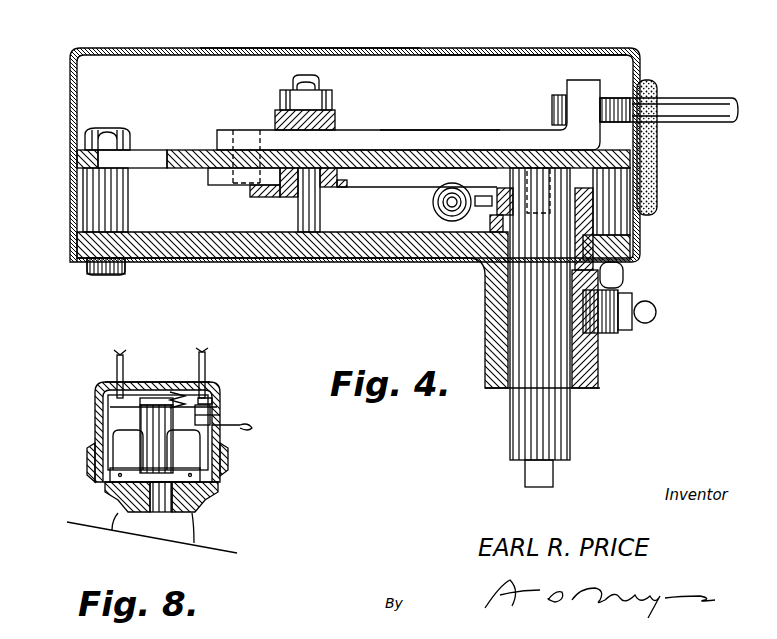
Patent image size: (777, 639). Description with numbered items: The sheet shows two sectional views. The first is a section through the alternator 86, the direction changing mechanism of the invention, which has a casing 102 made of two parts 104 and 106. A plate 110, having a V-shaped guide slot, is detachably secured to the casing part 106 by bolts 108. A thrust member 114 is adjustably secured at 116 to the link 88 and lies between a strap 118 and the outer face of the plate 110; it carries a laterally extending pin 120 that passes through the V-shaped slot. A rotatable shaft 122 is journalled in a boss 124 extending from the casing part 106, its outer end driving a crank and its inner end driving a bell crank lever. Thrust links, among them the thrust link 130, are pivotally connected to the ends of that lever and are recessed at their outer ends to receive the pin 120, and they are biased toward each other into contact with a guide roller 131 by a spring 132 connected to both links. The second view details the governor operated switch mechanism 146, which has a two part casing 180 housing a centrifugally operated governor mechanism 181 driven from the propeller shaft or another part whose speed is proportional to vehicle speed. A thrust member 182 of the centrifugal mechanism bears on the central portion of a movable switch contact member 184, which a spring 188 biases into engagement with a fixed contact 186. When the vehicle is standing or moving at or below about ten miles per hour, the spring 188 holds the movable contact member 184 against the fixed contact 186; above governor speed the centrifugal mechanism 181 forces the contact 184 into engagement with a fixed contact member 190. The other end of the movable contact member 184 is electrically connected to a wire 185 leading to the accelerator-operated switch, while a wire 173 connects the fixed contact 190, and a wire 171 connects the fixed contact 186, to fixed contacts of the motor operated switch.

In FIG. 4, the casing 102 is at (243, 47).
In FIG. 4, the casing part 104 is at (338, 50).
In FIG. 4, the alternator 86 is at (468, 50).
In FIG. 4, the link 88 is at (690, 98).
In FIG. 4, the adjustable securing point 116 is at (585, 82).
In FIG. 4, the thrust member 114 is at (405, 130).
In FIG. 4, the plate 110 is at (462, 150).
In FIG. 4, the bolts 108 is at (112, 200).
In FIG. 4, the casing part 106 is at (240, 260).
In FIG. 4, the boss 124 is at (487, 325).
In FIG. 4, the rotatable shaft 122 is at (520, 385).
In FIG. 4, the thrust link 130 is at (412, 178).
In FIG. 4, the guide roller 131 is at (290, 197).
In FIG. 4, the laterally extending pin 120 is at (248, 130).
In FIG. 4, the strap 118 is at (335, 122).
In FIG. 4, the spring 132 is at (452, 222).
In FIG. 8, the two part casing 180 is at (95, 415).
In FIG. 8, the governor operated switch mechanism 146 is at (93, 388).
In FIG. 8, the thrust member 182 is at (213, 472).
In FIG. 8, the centrifugally operated governor mechanism 181 is at (115, 482).
In FIG. 8, the spring 188 is at (165, 405).
In FIG. 8, the wire 185 is at (118, 356).
In FIG. 8, the wire 173 is at (206, 354).
In FIG. 8, the fixed contact member 190 is at (206, 375).
In FIG. 8, the movable switch contact member 184 is at (207, 400).
In FIG. 8, the fixed contact 186 is at (216, 410).
In FIG. 8, the wire 171 is at (250, 428).